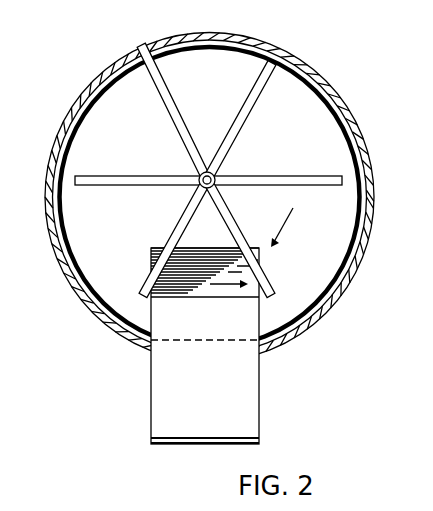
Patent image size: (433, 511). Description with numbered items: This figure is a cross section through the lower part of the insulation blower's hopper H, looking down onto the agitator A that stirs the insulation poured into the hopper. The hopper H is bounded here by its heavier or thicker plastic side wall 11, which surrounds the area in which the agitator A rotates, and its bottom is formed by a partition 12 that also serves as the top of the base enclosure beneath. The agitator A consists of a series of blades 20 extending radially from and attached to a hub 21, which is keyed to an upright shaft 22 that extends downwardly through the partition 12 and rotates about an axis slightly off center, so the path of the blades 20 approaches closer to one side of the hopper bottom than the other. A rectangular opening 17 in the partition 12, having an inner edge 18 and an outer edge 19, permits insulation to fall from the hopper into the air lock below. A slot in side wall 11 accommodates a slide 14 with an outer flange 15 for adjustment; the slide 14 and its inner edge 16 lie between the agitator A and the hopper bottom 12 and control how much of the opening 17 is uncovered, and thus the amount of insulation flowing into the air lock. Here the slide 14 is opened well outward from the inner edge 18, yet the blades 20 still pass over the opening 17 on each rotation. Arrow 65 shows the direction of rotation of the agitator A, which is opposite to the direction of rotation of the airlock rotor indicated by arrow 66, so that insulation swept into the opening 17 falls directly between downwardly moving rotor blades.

The side wall 11 is at (138, 52).
The hopper H is at (285, 41).
The partition 12 is at (112, 237).
The slide 14 is at (165, 398).
The outer flange 15 is at (240, 440).
The inner edge 16 is at (200, 298).
The rectangular opening 17 is at (153, 262).
The inner edge 18 is at (160, 248).
The outer edge 19 is at (194, 341).
The blades 20 is at (149, 175).
The hub 21 is at (218, 174).
The upright shaft 22 is at (218, 187).
The arrow 65 is at (287, 228).
The arrow 66 is at (221, 286).
The agitator A is at (177, 97).